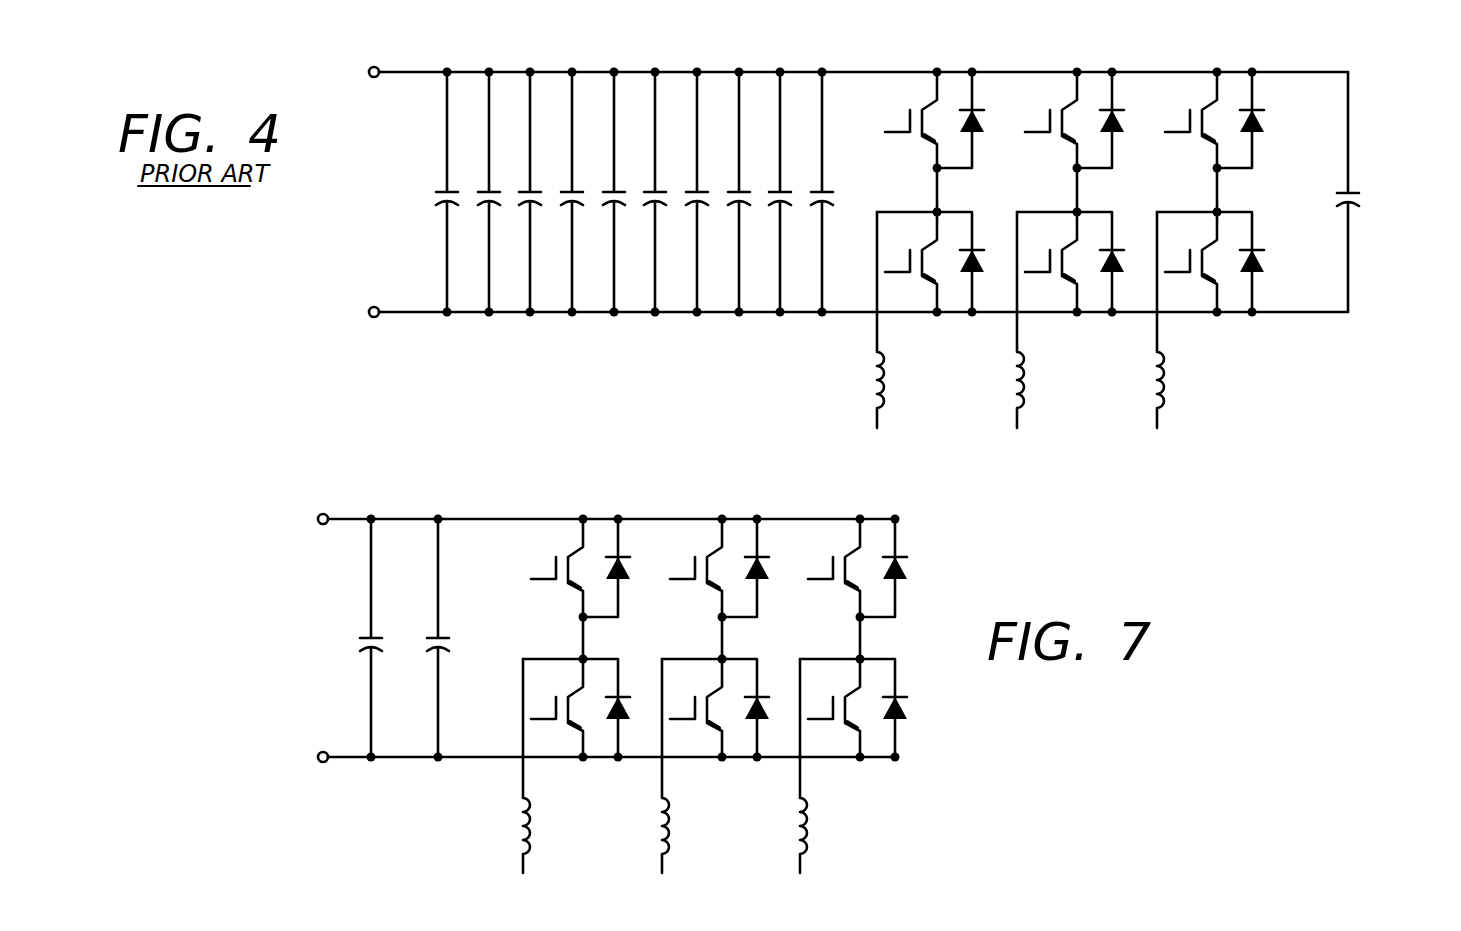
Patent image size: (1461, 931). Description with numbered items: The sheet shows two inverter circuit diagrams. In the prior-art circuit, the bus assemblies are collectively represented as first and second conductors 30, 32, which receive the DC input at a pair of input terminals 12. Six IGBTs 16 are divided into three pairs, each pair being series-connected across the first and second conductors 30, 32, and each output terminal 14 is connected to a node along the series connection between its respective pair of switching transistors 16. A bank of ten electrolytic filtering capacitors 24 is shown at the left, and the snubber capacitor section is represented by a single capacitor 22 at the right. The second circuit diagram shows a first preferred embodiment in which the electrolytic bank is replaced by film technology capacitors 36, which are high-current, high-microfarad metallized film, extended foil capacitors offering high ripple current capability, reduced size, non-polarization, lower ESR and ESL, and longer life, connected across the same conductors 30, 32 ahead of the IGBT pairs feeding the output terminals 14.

In FIG. 4, the input terminals 12 is at (369, 74).
In FIG. 7, the input terminals 12 is at (318, 520).
In FIG. 4, the output terminal 14 is at (877, 335).
In FIG. 7, the output terminal 14 is at (525, 782).
In FIG. 4, the IGBT 16 is at (1205, 276).
In FIG. 7, the IGBT 16 is at (845, 723).
In FIG. 4, the snubber capacitor 22 is at (1351, 190).
In FIG. 4, the electrolytic filtering capacitors 24 is at (445, 190).
In FIG. 4, the first conductor 30 is at (597, 71).
In FIG. 7, the first conductor 30 is at (485, 518).
In FIG. 4, the second conductor 32 is at (800, 313).
In FIG. 7, the second conductor 32 is at (487, 759).
In FIG. 7, the film technology capacitor 36 is at (374, 636).